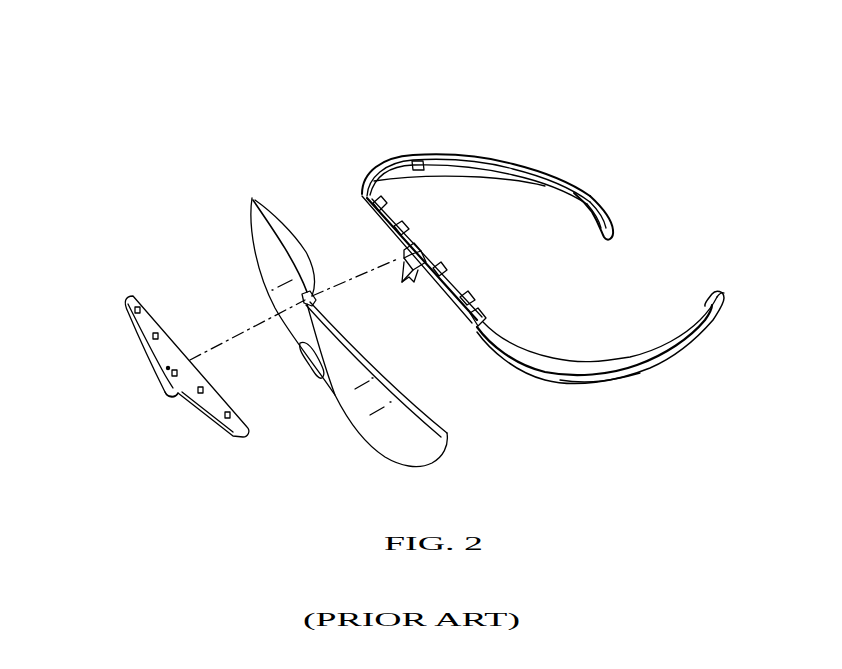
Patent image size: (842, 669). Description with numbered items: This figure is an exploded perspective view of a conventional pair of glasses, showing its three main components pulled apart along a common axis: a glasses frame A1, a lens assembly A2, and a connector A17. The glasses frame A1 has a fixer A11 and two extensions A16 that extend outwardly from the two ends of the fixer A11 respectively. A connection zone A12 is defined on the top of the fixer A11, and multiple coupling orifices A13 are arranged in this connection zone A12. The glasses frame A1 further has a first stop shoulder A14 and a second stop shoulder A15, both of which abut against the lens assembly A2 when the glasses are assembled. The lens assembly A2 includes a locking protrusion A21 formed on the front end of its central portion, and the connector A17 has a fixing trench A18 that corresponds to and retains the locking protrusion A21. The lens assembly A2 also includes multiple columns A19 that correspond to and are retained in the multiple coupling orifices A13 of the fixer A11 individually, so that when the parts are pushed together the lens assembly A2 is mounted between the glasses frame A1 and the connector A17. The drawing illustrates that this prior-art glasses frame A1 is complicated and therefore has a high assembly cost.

The glasses frame A1 is at (627, 154).
The lens assembly A2 is at (264, 266).
The fixer A11 is at (385, 162).
The connection zone A12 is at (414, 224).
The coupling orifices A13 is at (481, 292).
The first stop shoulder A14 is at (417, 247).
The second stop shoulder A15 is at (408, 268).
The extensions A16 is at (540, 168).
The connector A17 is at (106, 277).
The fixing trench A18 is at (165, 370).
The columns A19 is at (158, 334).
The locking protrusion A21 is at (312, 293).